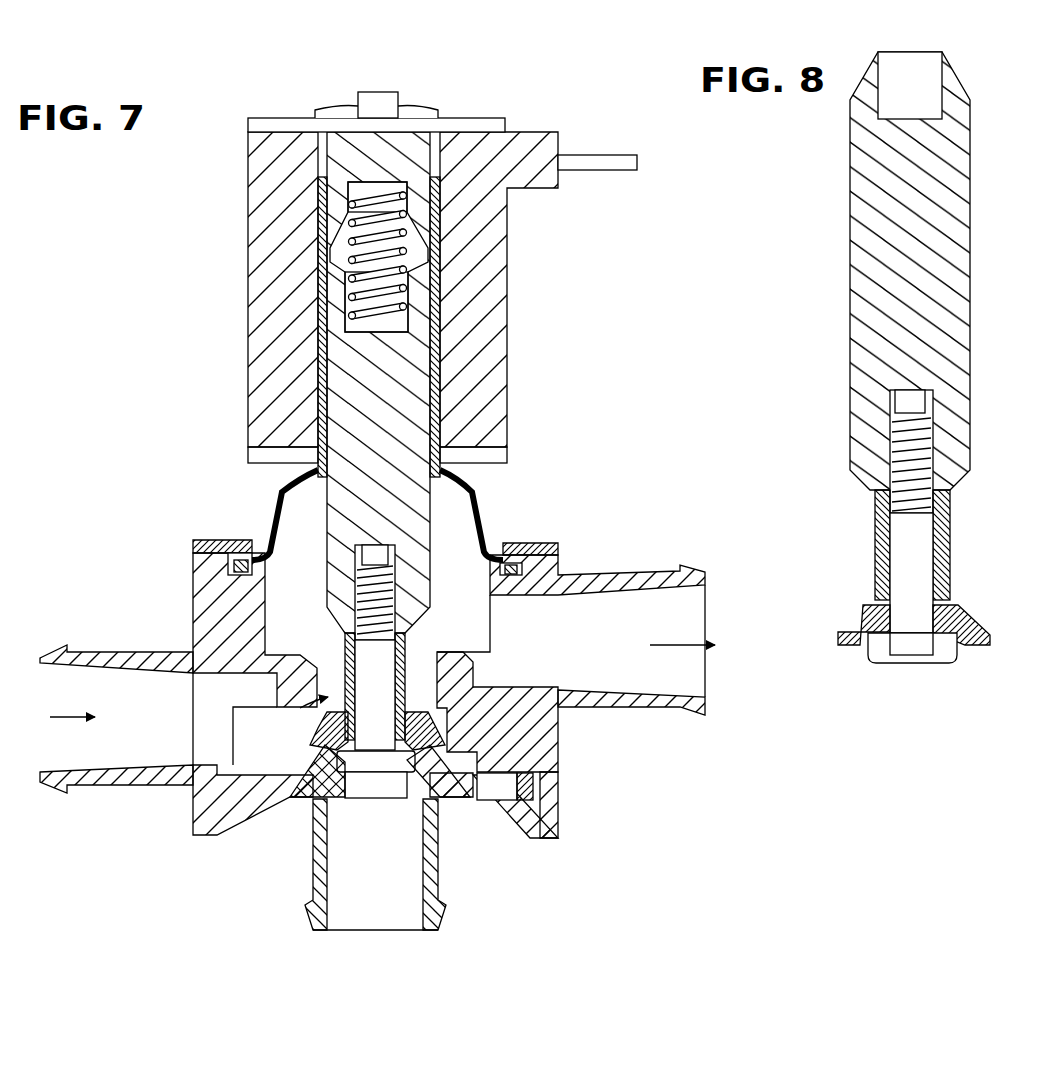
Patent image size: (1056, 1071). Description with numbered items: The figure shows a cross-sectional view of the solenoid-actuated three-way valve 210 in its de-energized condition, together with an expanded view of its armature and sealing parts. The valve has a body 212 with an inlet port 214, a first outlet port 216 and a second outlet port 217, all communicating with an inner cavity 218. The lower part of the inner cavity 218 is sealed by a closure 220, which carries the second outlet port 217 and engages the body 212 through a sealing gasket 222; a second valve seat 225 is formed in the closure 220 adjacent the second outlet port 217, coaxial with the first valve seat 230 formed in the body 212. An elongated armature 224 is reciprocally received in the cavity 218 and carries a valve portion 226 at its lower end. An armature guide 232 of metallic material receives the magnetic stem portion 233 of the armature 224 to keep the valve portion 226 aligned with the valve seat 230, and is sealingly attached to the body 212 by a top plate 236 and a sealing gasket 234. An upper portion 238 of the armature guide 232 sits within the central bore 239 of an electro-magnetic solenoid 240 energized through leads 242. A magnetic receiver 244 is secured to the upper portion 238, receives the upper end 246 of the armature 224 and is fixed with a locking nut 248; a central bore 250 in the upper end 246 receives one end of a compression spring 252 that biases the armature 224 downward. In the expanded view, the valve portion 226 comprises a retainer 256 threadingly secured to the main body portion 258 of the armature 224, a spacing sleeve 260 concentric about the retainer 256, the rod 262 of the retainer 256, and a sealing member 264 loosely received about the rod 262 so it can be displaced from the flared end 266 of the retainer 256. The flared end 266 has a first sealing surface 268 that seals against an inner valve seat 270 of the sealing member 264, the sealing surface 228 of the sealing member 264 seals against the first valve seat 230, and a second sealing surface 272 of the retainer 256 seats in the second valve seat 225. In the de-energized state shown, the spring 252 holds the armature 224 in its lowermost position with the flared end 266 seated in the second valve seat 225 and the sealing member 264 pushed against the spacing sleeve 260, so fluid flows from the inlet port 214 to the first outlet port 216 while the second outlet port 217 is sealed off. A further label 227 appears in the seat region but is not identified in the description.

In FIG. 7, the solenoid-actuated three-way valve 210 is at (625, 385).
In FIG. 7, the body 212 is at (220, 608).
In FIG. 7, the inlet port 214 is at (120, 757).
In FIG. 7, the first outlet port 216 is at (630, 605).
In FIG. 7, the second outlet port 217 is at (415, 880).
In FIG. 7, the inner cavity 218 is at (460, 535).
In FIG. 7, the closure 220 is at (535, 840).
In FIG. 7, the sealing gasket 222 is at (533, 790).
In FIG. 7, the elongated armature 224 is at (322, 430).
In FIG. 8, the elongated armature 224 is at (852, 355).
In FIG. 7, the second valve seat 225 is at (432, 820).
In FIG. 7, the valve portion 226 is at (346, 764).
In FIG. 8, the valve portion 226 is at (970, 568).
In FIG. 7, the seat surface 227 is at (335, 772).
In FIG. 7, the sealing surface 228 is at (322, 722).
In FIG. 8, the sealing surface 228 is at (865, 620).
In FIG. 7, the first valve seat 230 is at (492, 635).
In FIG. 7, the armature guide 232 is at (470, 500).
In FIG. 7, the stem portion 233 is at (330, 370).
In FIG. 8, the stem portion 233 is at (950, 315).
In FIG. 7, the sealing gasket 234 is at (545, 548).
In FIG. 7, the top plate 236 is at (225, 540).
In FIG. 7, the upper portion 238 is at (322, 262).
In FIG. 7, the central bore 239 is at (445, 375).
In FIG. 7, the electro-magnetic solenoid 240 is at (495, 300).
In FIG. 7, the leads 242 is at (600, 155).
In FIG. 7, the receiver 244 is at (340, 155).
In FIG. 7, the upper end 246 is at (500, 125).
In FIG. 7, the locking nut 248 is at (400, 110).
In FIG. 7, the central bore 250 is at (352, 320).
In FIG. 8, the central bore 250 is at (945, 92).
In FIG. 7, the compression spring 252 is at (405, 240).
In FIG. 8, the retainer 256 is at (948, 650).
In FIG. 7, the main body portion 258 is at (360, 190).
In FIG. 8, the main body portion 258 is at (960, 432).
In FIG. 7, the spacing sleeve 260 is at (375, 686).
In FIG. 8, the spacing sleeve 260 is at (950, 520).
In FIG. 7, the rod 262 is at (375, 695).
In FIG. 8, the rod 262 is at (890, 545).
In FIG. 7, the sealing member 264 is at (420, 790).
In FIG. 8, the sealing member 264 is at (960, 625).
In FIG. 8, the flared end 266 is at (875, 655).
In FIG. 8, the first sealing surface 268 is at (895, 640).
In FIG. 8, the inner valve seat 270 is at (948, 645).
In FIG. 8, the second sealing surface 272 is at (893, 650).